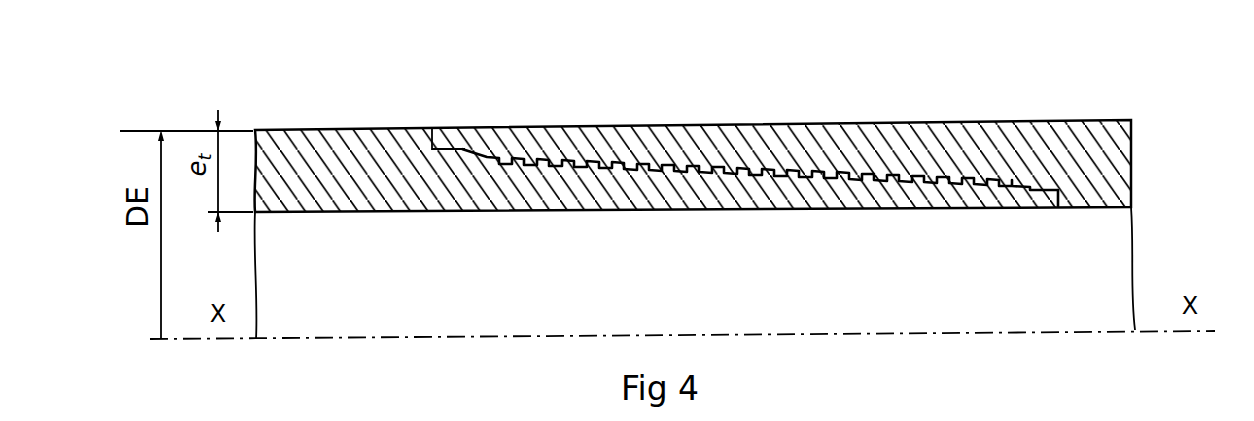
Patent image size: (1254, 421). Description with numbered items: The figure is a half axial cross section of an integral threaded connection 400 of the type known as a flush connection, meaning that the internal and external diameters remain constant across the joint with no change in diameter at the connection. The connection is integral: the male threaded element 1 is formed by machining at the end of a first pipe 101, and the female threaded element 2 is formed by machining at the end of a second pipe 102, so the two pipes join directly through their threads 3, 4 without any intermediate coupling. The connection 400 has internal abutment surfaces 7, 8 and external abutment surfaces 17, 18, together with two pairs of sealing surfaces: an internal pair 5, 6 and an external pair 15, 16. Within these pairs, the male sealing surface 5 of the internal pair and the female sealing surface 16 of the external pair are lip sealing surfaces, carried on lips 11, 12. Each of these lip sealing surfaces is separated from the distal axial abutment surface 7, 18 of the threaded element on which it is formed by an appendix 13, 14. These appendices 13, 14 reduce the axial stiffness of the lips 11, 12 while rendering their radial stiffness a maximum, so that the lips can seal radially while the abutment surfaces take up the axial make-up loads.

The male threaded element 1 is at (815, 243).
The female threaded element 2 is at (935, 120).
The thread root 3 is at (636, 168).
The thread 4 is at (693, 160).
The male sealing surface 5 is at (1044, 178).
The sealing surface 6 is at (993, 208).
The internal abutment surface 7 is at (1087, 208).
The internal abutment surface 8 is at (1047, 208).
The lip 11 is at (1020, 207).
The lip 12 is at (495, 153).
The appendix 13 is at (1030, 208).
The appendix 14 is at (482, 141).
The sealing surface 15 is at (487, 158).
The female sealing surface 16 is at (471, 151).
The external abutment surface 17 is at (478, 149).
The external abutment surface 18 is at (410, 131).
The first pipe 101 is at (371, 188).
The second pipe 102 is at (1119, 120).
The integral threaded connection 400 is at (815, 95).